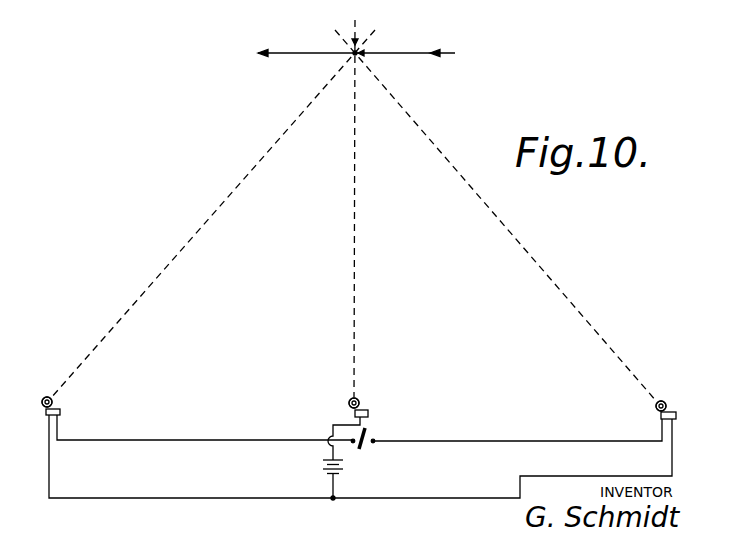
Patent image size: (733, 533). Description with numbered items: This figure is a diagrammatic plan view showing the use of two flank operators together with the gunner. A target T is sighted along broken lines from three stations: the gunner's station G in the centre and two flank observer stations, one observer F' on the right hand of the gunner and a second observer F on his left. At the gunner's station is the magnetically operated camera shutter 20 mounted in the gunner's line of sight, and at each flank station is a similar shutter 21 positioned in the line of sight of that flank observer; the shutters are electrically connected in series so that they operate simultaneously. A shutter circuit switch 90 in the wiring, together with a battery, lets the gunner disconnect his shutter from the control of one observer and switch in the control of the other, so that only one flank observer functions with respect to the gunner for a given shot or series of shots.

The target (sound source) position T is at (362, 51).
The shutter 21 is at (54, 401).
The camera shutter 20 is at (359, 400).
The shutter circuit switch 90 is at (372, 437).
The right receiving station F is at (673, 403).
The observer F' is at (34, 405).
The central receiving station G is at (343, 403).